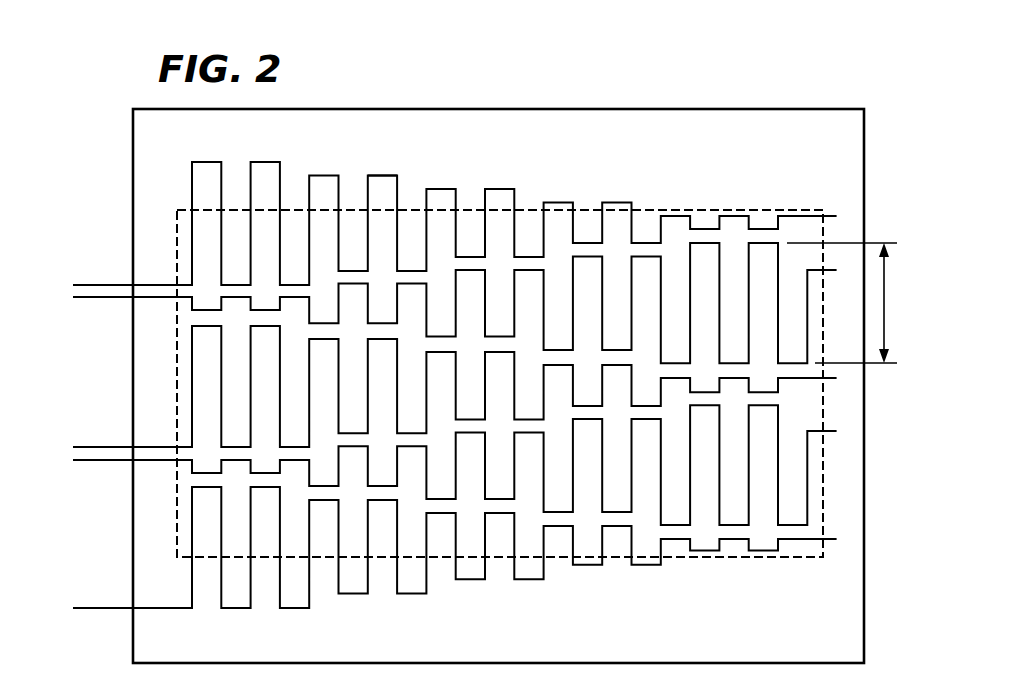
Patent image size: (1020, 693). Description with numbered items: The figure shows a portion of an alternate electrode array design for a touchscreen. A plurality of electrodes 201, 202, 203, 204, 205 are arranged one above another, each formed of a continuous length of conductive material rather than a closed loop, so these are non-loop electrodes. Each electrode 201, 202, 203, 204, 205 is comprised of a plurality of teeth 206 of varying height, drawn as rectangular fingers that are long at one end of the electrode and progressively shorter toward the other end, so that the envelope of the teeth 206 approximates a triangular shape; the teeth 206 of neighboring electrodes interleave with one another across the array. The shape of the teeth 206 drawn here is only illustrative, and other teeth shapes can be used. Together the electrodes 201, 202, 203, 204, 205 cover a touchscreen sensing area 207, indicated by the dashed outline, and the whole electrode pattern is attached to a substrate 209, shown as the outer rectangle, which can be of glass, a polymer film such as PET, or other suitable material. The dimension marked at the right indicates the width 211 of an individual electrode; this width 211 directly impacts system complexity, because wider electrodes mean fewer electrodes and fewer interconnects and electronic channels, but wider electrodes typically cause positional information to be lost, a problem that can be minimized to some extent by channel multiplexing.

The electrode 201 is at (280, 175).
The electrode 202 is at (427, 312).
The electrode 203 is at (222, 372).
The electrode 204 is at (310, 470).
The electrode 205 is at (280, 532).
The teeth 206 is at (497, 189).
The touchscreen sensing area 207 is at (792, 208).
The substrate 209 is at (713, 109).
The width 211 is at (884, 287).